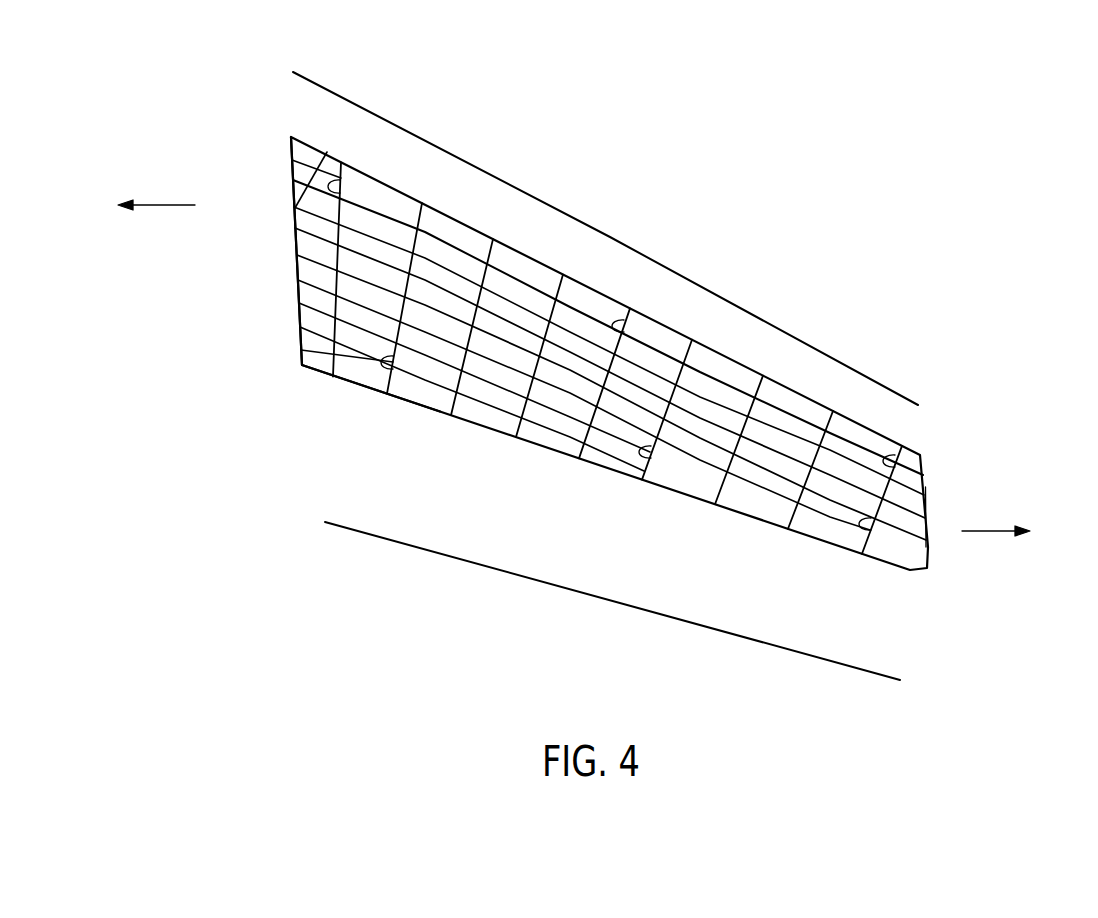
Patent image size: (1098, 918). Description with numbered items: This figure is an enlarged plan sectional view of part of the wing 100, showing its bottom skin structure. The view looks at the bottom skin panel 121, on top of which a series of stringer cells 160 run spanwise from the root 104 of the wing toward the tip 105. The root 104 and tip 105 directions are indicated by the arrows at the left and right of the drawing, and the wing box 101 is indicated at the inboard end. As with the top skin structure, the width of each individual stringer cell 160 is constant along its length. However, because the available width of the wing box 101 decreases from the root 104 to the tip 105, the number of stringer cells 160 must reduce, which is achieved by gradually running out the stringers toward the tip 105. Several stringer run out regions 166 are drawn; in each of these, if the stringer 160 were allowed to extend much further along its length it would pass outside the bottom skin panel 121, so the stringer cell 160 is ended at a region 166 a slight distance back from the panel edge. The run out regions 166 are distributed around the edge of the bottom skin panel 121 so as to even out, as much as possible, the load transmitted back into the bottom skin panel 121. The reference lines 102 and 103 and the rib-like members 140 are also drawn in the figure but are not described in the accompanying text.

The wing 100 is at (532, 353).
The wing box 101 is at (210, 290).
The leading edge line 102 is at (630, 249).
The trailing edge line 103 is at (603, 598).
The root 104 is at (135, 205).
The tip 105 is at (1020, 531).
The bottom skin panel 121 is at (425, 397).
The ribs 140 is at (744, 450).
The stringer cell 160 is at (307, 330).
The stringer run out region 166 is at (382, 366).